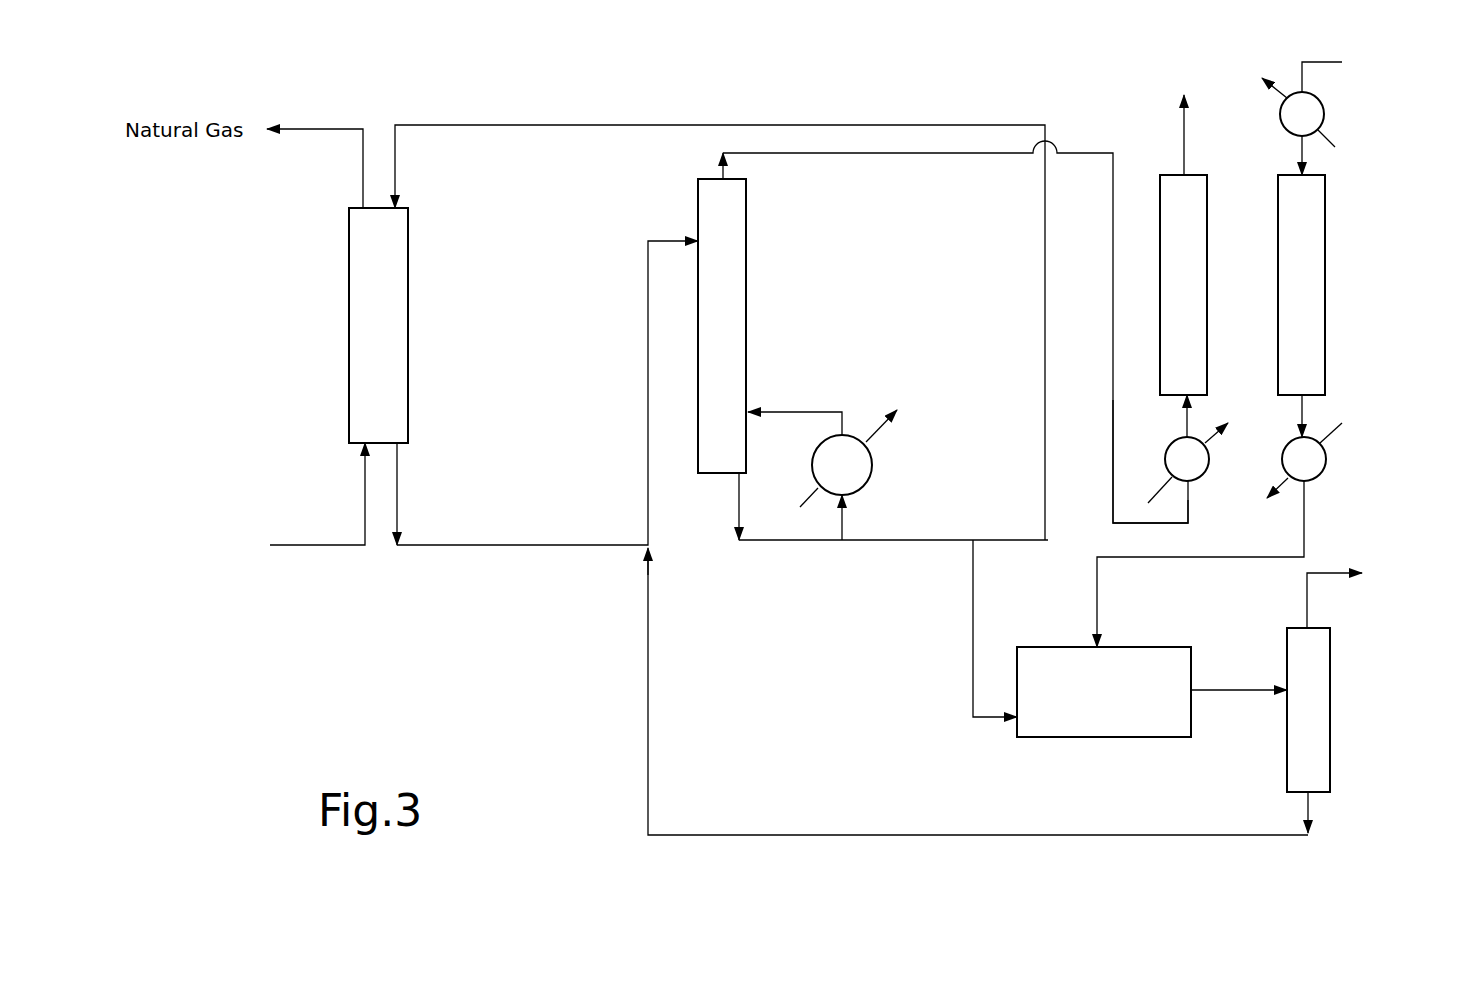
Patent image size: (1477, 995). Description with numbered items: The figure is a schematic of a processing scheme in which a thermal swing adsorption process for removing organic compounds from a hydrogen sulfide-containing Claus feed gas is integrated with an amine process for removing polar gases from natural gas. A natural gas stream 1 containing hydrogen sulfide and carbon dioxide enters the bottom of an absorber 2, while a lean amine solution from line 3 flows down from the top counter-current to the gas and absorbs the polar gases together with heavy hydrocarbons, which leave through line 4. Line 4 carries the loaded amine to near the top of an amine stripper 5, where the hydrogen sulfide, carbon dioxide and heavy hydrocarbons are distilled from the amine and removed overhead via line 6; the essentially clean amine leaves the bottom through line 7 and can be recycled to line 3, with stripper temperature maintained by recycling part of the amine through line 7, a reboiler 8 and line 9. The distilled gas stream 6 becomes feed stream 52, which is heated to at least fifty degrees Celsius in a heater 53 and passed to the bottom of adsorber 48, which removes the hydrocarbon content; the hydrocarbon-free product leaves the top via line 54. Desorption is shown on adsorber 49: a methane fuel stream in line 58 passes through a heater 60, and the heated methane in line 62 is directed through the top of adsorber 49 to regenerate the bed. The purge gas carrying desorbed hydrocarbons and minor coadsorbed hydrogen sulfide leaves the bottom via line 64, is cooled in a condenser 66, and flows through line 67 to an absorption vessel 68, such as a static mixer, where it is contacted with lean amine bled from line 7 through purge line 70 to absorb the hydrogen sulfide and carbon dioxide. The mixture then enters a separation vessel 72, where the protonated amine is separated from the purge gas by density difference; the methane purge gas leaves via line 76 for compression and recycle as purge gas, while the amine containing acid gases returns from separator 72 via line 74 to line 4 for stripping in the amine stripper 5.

The natural gas stream 1 is at (342, 545).
The absorber 2 is at (349, 272).
The lean amine solution line 3 is at (482, 125).
The rich amine line 4 is at (400, 466).
The amine stripper 5 is at (698, 218).
The stripper overhead line 6 is at (746, 153).
The stripper bottoms line 7 is at (818, 542).
The reboiler 8 is at (864, 487).
The reboiler return line 9 is at (796, 412).
The adsorber 48 is at (1207, 240).
The adsorber 49 is at (1325, 240).
The feed stream 52 is at (1113, 468).
The heater 53 is at (1172, 446).
The product line 54 is at (1184, 150).
The fuel stream line 58 is at (1310, 62).
The heater 60 is at (1322, 104).
The heated methane line 62 is at (1302, 152).
The purge gas outlet line 64 is at (1306, 408).
The condenser 66 is at (1326, 462).
The cooled purge gas line 67 is at (1236, 557).
The absorption vessel 68 is at (1191, 722).
The purge line 70 is at (973, 602).
The separation vessel 72 is at (1330, 670).
The amine recycle line 74 is at (1240, 835).
The methane purge gas line 76 is at (1318, 575).